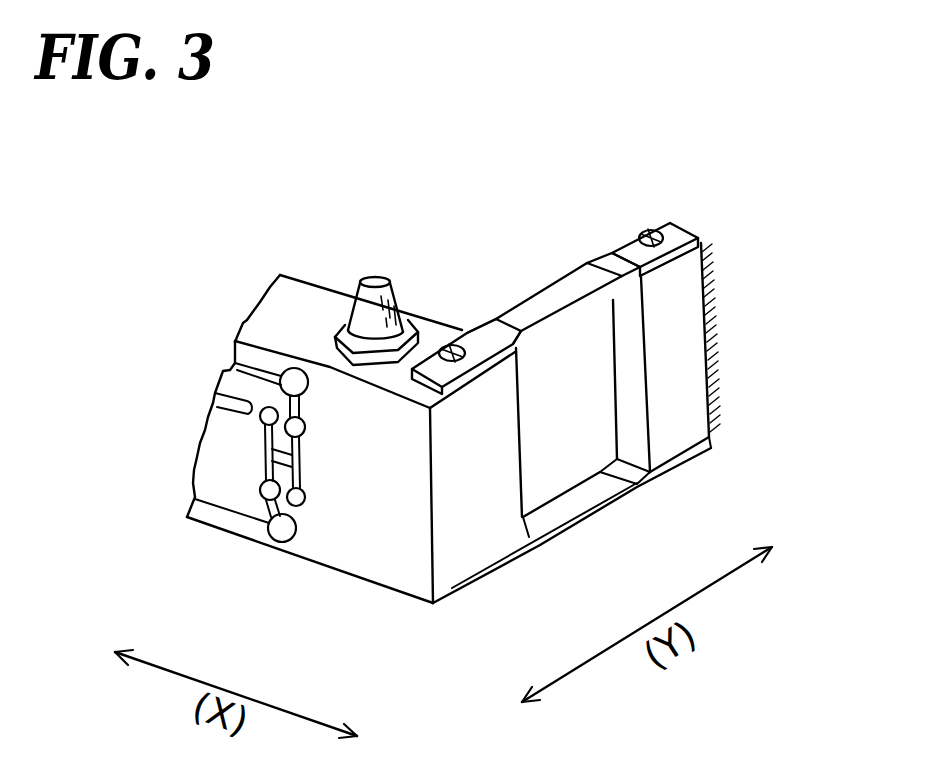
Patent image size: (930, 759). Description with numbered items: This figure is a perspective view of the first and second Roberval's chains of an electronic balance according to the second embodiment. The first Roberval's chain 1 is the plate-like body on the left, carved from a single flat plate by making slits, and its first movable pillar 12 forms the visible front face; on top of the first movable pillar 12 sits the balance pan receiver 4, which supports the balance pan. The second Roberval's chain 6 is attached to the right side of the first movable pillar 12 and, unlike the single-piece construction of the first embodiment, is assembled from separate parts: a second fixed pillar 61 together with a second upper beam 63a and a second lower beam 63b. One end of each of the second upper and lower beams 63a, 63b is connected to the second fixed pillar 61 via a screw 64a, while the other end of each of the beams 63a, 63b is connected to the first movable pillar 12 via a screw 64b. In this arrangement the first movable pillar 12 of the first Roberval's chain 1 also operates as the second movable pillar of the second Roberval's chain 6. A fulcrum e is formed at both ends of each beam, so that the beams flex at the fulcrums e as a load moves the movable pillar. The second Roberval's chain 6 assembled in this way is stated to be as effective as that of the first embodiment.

The first Roberval's chain 1 is at (300, 607).
The first movable pillar 12 is at (392, 573).
The balance pan receiver 4 is at (396, 308).
The second Roberval's chain 6 is at (590, 226).
The second fixed pillar 61 is at (690, 367).
The second upper beam 63a is at (563, 290).
The second lower beam 63b is at (593, 518).
The screw 64a is at (652, 230).
The screw 64b is at (455, 345).
The fulcrum e is at (462, 336).